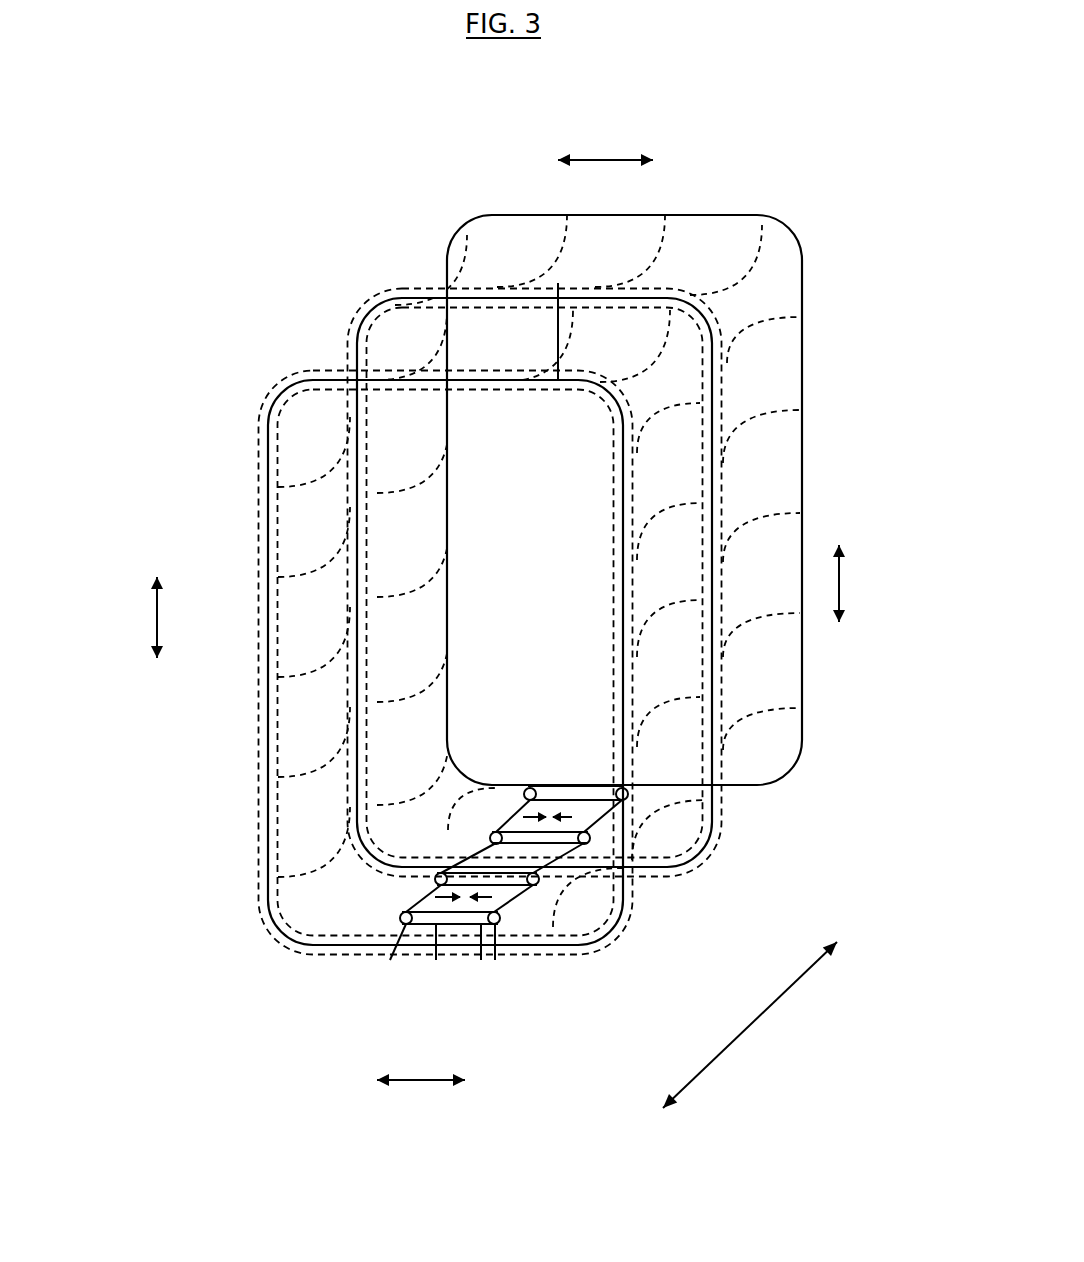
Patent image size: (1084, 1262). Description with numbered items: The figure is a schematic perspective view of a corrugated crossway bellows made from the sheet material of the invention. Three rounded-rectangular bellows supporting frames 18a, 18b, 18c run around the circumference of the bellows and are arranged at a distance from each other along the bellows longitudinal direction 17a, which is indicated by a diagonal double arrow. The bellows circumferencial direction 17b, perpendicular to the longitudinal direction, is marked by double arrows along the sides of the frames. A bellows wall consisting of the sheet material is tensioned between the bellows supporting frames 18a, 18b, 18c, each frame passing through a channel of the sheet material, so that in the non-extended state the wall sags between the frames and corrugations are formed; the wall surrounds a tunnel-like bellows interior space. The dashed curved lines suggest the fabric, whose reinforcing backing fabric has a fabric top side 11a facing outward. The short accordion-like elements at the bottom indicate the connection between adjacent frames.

The fabric top side 11a is at (400, 350).
The bellows supporting frame 18a is at (266, 412).
The bellows supporting frame 18b is at (360, 322).
The bellows supporting frame 18c is at (803, 282).
The bellows longitudinal direction 17a is at (750, 1025).
The bellows circumferencial direction 17b is at (501, 603).